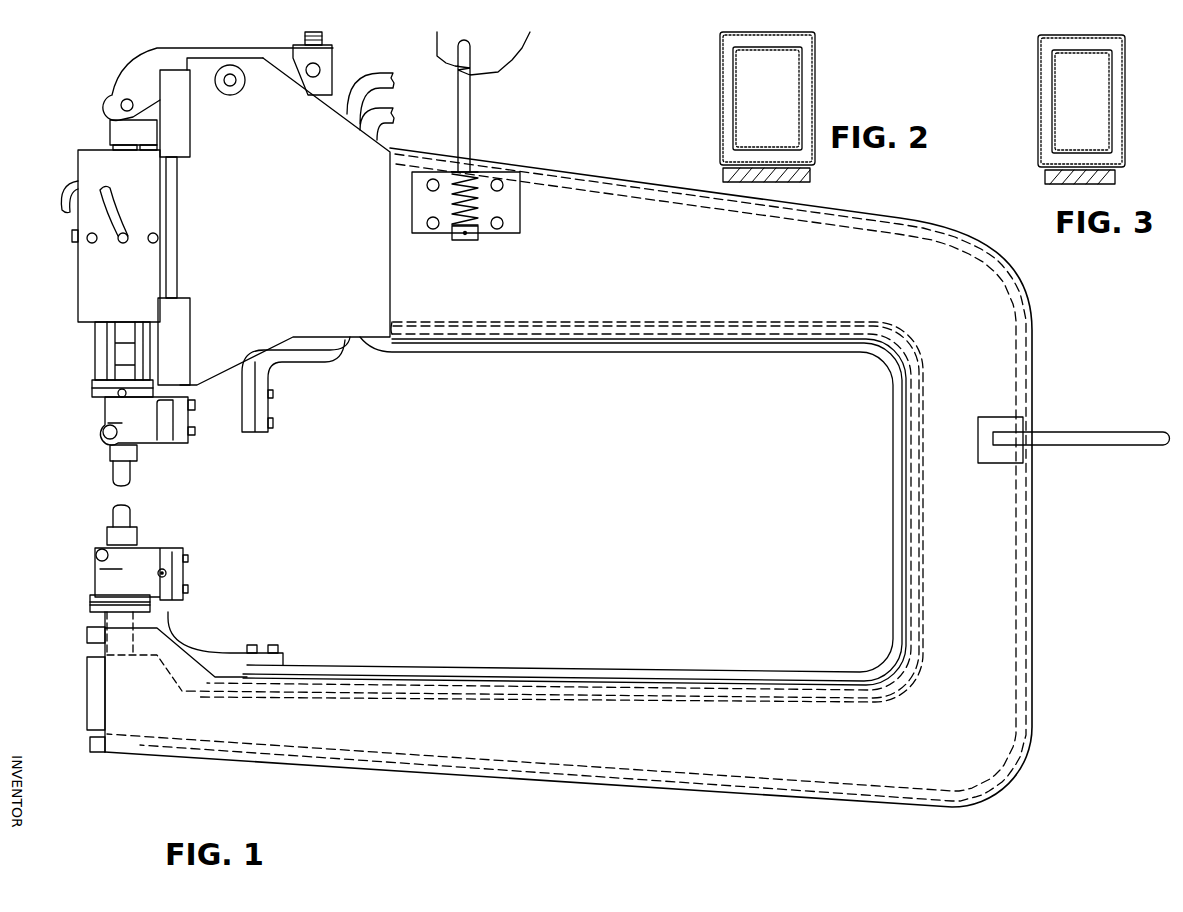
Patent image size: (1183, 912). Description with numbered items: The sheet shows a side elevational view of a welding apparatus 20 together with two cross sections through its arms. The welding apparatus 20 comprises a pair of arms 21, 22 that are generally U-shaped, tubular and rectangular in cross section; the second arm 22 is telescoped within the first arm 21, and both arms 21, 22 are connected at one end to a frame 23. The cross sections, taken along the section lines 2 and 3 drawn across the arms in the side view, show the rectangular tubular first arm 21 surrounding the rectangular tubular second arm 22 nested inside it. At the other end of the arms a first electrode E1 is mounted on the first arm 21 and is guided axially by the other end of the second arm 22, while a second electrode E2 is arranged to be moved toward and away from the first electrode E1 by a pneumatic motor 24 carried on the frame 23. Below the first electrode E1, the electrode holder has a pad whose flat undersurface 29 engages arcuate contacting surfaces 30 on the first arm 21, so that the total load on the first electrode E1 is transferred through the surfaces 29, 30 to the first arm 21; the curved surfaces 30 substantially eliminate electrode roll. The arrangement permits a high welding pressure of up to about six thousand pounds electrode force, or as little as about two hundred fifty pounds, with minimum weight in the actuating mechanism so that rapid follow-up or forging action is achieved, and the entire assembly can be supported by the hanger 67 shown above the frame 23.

In FIG. 1, the welding apparatus 20 is at (582, 163).
In FIG. 1, the first arm 21 is at (640, 184).
In FIG. 2, the first arm 21 is at (815, 40).
In FIG. 3, the first arm 21 is at (1038, 48).
In FIG. 1, the second arm 22 is at (896, 230).
In FIG. 2, the second arm 22 is at (802, 76).
In FIG. 3, the second arm 22 is at (1053, 82).
In FIG. 1, the frame 23 is at (390, 140).
In FIG. 1, the pneumatic motor 24 is at (70, 276).
In FIG. 1, the flat undersurface 29 is at (92, 620).
In FIG. 1, the arcuate contacting surfaces 30 is at (113, 650).
In FIG. 1, the hanger 67 is at (470, 118).
In FIG. 1, the first electrode E1 is at (132, 517).
In FIG. 1, the second electrode E2 is at (132, 478).
In FIG. 1, the section line 2— 2 is at (803, 828).
In FIG. 1, the section line 3— 3 is at (808, 374).